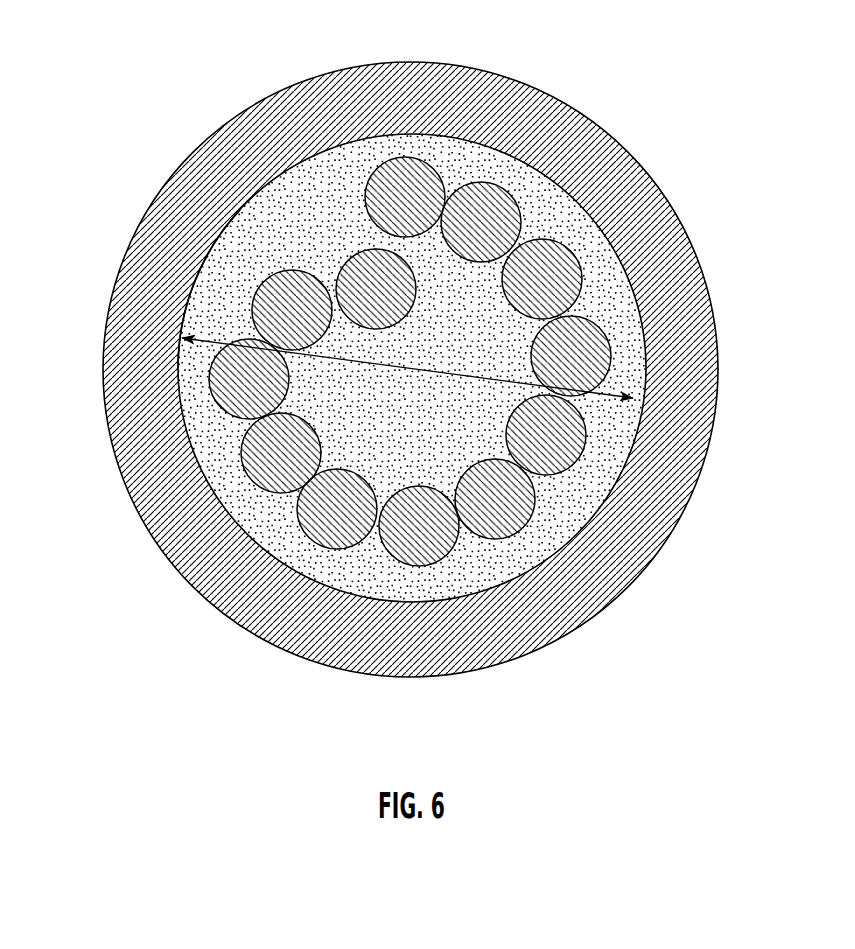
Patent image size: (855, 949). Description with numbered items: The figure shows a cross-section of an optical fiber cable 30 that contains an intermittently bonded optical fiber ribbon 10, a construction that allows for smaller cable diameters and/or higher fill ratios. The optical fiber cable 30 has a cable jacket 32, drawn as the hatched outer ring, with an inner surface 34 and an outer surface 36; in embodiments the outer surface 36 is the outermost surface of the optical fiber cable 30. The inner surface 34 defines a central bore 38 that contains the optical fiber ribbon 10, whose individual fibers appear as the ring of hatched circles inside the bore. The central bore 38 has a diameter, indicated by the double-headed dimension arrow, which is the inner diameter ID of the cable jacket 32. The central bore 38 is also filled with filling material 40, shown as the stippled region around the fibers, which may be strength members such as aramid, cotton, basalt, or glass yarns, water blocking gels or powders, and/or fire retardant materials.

The optical fiber cable 30 is at (115, 90).
The intermittently bonded optical fiber ribbon 10 is at (455, 165).
The cable jacket 32 is at (629, 168).
The inner surface 34 is at (625, 467).
The outer surface 36 is at (537, 648).
The central bore 38 is at (283, 527).
The filling material 40 is at (215, 443).
The inner diameter ID is at (643, 377).